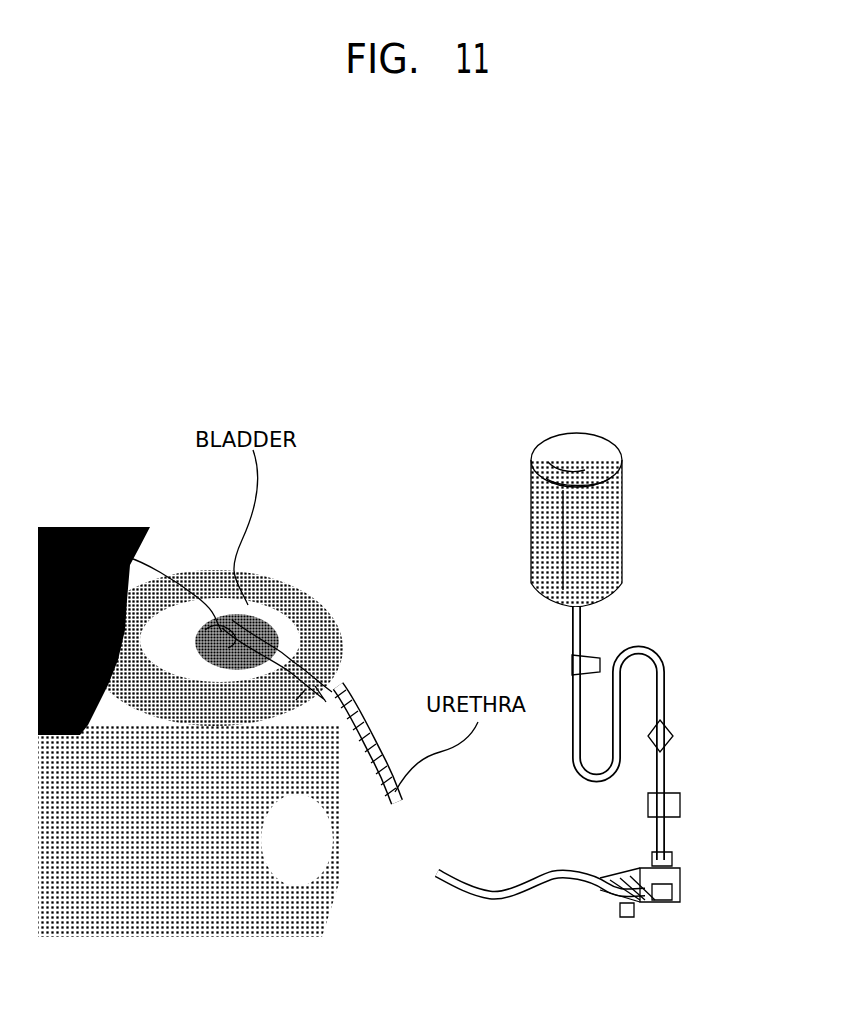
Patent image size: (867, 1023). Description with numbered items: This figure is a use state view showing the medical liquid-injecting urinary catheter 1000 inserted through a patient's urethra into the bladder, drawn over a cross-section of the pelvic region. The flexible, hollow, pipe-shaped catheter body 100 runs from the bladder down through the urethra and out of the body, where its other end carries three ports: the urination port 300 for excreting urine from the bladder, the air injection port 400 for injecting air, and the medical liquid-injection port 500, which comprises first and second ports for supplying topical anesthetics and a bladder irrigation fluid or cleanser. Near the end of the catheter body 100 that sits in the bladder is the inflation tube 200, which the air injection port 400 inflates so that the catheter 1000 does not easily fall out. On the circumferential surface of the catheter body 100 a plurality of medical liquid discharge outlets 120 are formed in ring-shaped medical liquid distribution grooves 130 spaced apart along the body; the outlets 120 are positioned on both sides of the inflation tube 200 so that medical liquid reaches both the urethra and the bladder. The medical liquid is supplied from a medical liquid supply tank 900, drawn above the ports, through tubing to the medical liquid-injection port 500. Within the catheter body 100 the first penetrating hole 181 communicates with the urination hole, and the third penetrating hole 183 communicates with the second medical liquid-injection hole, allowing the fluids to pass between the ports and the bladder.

The catheter body 100 is at (437, 872).
The medical liquid discharge outlet 120 is at (306, 700).
The ring-shaped medical liquid distribution groove 130 is at (345, 712).
The first penetrating hole 181 is at (98, 530).
The third penetrating hole 183 is at (220, 630).
The inflation tube 200 is at (268, 652).
The urination port 300 is at (658, 898).
The air injection port 400 is at (625, 912).
The medical liquid-injection port 500 is at (727, 872).
The medical liquid supply tank 900 is at (535, 482).
The medical liquid-injecting urinary catheter 1000 is at (566, 842).